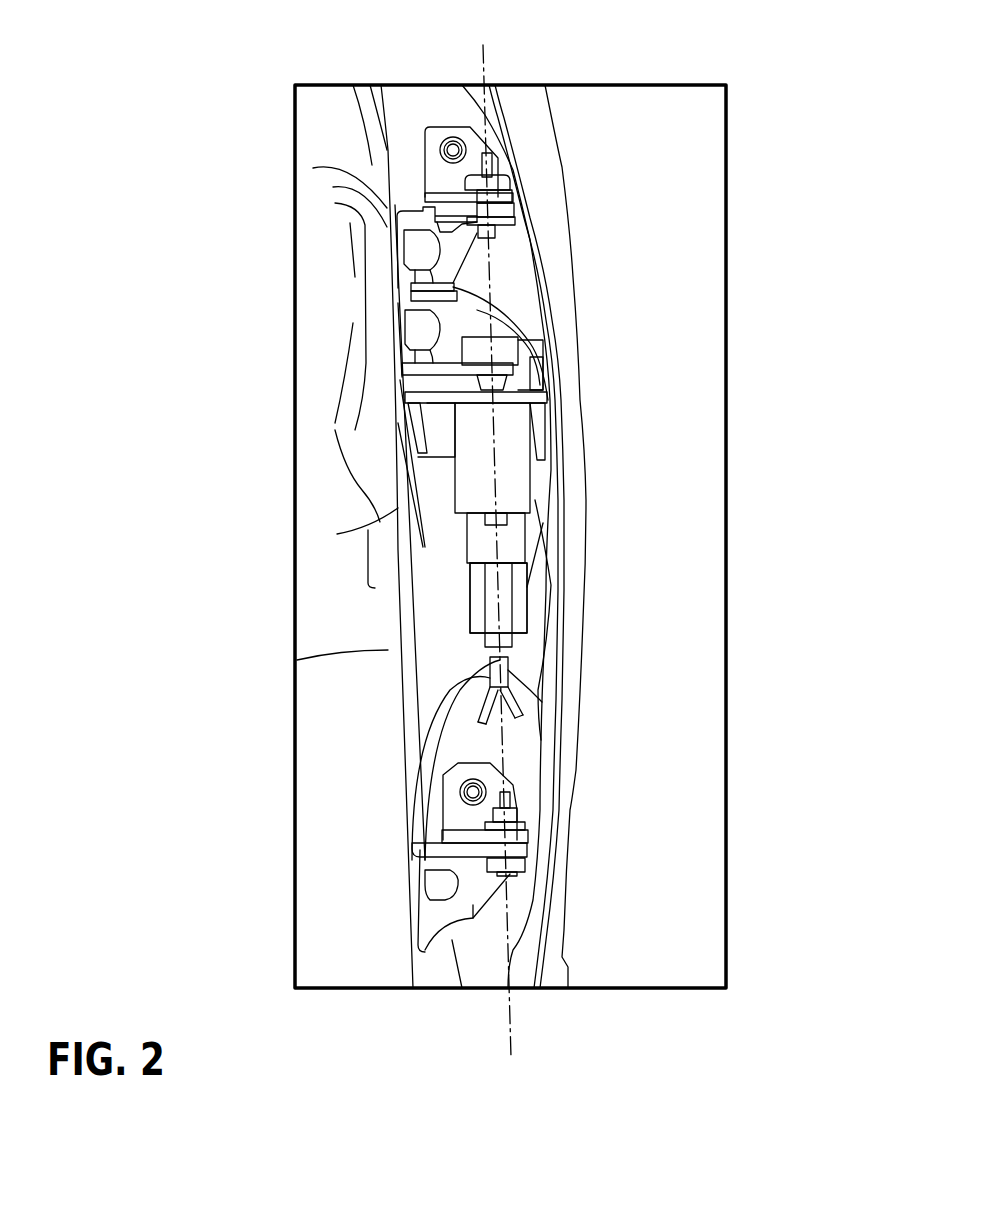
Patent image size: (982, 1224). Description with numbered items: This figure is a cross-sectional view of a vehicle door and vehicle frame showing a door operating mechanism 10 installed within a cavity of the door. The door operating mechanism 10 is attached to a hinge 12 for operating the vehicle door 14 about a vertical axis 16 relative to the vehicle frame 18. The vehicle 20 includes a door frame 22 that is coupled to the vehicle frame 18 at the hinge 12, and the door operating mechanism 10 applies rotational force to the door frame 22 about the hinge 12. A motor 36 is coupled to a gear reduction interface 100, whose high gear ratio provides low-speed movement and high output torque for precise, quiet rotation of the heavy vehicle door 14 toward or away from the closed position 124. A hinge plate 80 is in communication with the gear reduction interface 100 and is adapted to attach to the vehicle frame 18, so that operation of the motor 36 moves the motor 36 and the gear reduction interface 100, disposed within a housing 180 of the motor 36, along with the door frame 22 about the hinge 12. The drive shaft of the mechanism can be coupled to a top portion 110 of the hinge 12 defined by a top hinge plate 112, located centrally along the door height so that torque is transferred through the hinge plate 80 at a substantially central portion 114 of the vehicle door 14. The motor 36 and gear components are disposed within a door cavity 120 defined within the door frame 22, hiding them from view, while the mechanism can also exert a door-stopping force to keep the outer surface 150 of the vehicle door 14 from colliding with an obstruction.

The door operating mechanism 10 is at (550, 480).
The hinge 12 is at (390, 268).
The vehicle door 14 is at (582, 167).
The vertical axis 16 is at (488, 72).
The vehicle frame 18 is at (395, 342).
The vehicle 20 is at (210, 823).
The door frame 22 is at (448, 668).
The motor 36 is at (462, 497).
The hinge plate 80 is at (393, 228).
The gear reduction interface 100 is at (510, 428).
The top portion 110 is at (333, 305).
The top hinge plate 112 is at (395, 348).
The substantially central portion 114 is at (582, 267).
The door cavity 120 is at (527, 665).
The closed position 124 is at (578, 795).
The outer surface 150 is at (573, 597).
The housing 180 is at (465, 420).